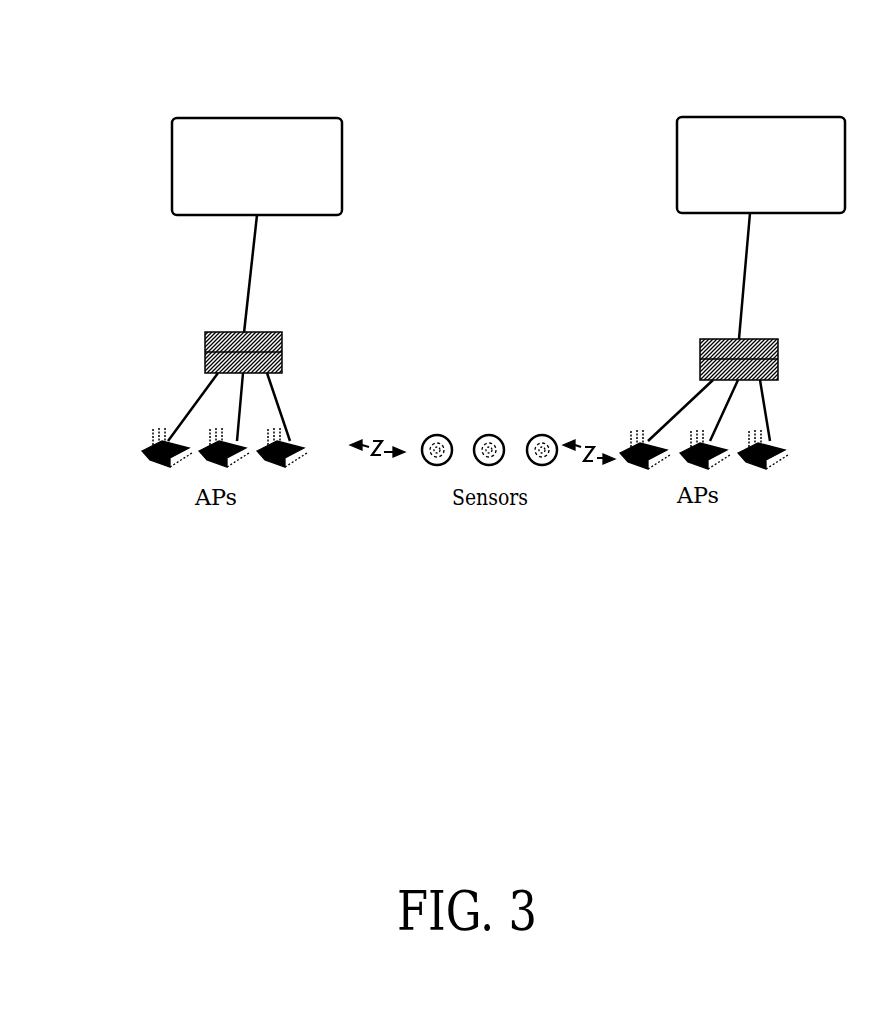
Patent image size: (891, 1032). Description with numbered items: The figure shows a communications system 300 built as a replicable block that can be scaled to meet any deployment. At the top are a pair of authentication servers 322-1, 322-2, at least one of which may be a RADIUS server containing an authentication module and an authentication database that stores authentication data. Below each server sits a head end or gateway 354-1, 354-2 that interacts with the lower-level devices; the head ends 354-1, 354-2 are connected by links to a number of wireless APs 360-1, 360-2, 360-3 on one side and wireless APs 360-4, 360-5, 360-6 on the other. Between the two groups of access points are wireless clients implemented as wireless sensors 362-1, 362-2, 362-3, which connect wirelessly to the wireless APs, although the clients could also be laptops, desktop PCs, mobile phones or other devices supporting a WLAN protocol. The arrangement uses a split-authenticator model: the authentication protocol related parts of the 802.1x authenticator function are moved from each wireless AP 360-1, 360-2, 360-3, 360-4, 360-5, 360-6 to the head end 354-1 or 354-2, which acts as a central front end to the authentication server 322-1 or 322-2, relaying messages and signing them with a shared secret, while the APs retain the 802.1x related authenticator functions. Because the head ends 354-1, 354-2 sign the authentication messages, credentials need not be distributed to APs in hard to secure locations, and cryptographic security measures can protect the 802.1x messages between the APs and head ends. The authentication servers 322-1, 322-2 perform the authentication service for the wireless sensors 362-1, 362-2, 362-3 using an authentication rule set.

The communications system 300 is at (495, 72).
The authentication server 322-1 is at (313, 197).
The authentication server 322-2 is at (816, 196).
The head end (HE) or gateway 354-1 is at (210, 345).
The head end (HE) or gateway 354-2 is at (706, 345).
The wireless AP 360-1 is at (136, 446).
The wireless AP 360-2 is at (214, 447).
The wireless AP 360-3 is at (295, 449).
The wireless AP 360-4 is at (632, 458).
The wireless AP 360-5 is at (718, 466).
The wireless AP 360-6 is at (781, 457).
The wireless sensor 362-1 is at (437, 436).
The wireless sensor 362-2 is at (489, 436).
The wireless sensor 362-3 is at (542, 436).